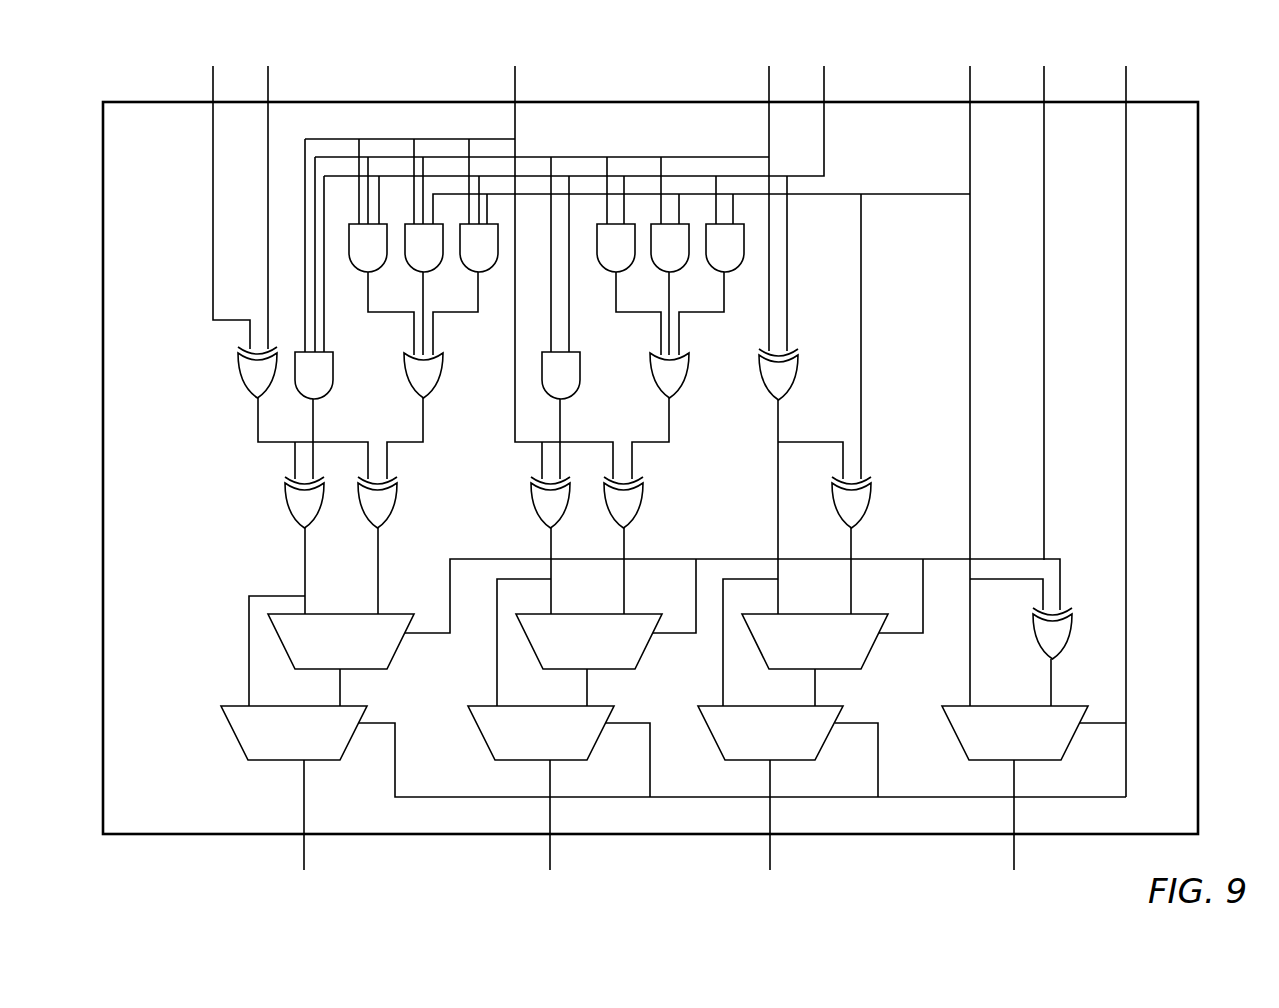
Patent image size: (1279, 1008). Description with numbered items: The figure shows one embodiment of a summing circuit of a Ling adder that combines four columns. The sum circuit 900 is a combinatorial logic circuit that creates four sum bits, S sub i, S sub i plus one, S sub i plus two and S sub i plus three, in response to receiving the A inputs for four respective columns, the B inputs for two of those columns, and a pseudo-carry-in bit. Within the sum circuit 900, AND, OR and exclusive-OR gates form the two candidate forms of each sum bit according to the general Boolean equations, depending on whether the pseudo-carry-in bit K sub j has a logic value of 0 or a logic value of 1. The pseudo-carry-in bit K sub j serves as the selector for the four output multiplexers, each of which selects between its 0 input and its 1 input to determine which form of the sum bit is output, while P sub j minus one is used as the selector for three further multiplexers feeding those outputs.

The sum circuit 900 is at (192, 821).
The multiplexer 0-input (select=0) data path 0 is at (654, 687).
The multiplexer 1-input (select=1) path and select lines 1 is at (725, 678).